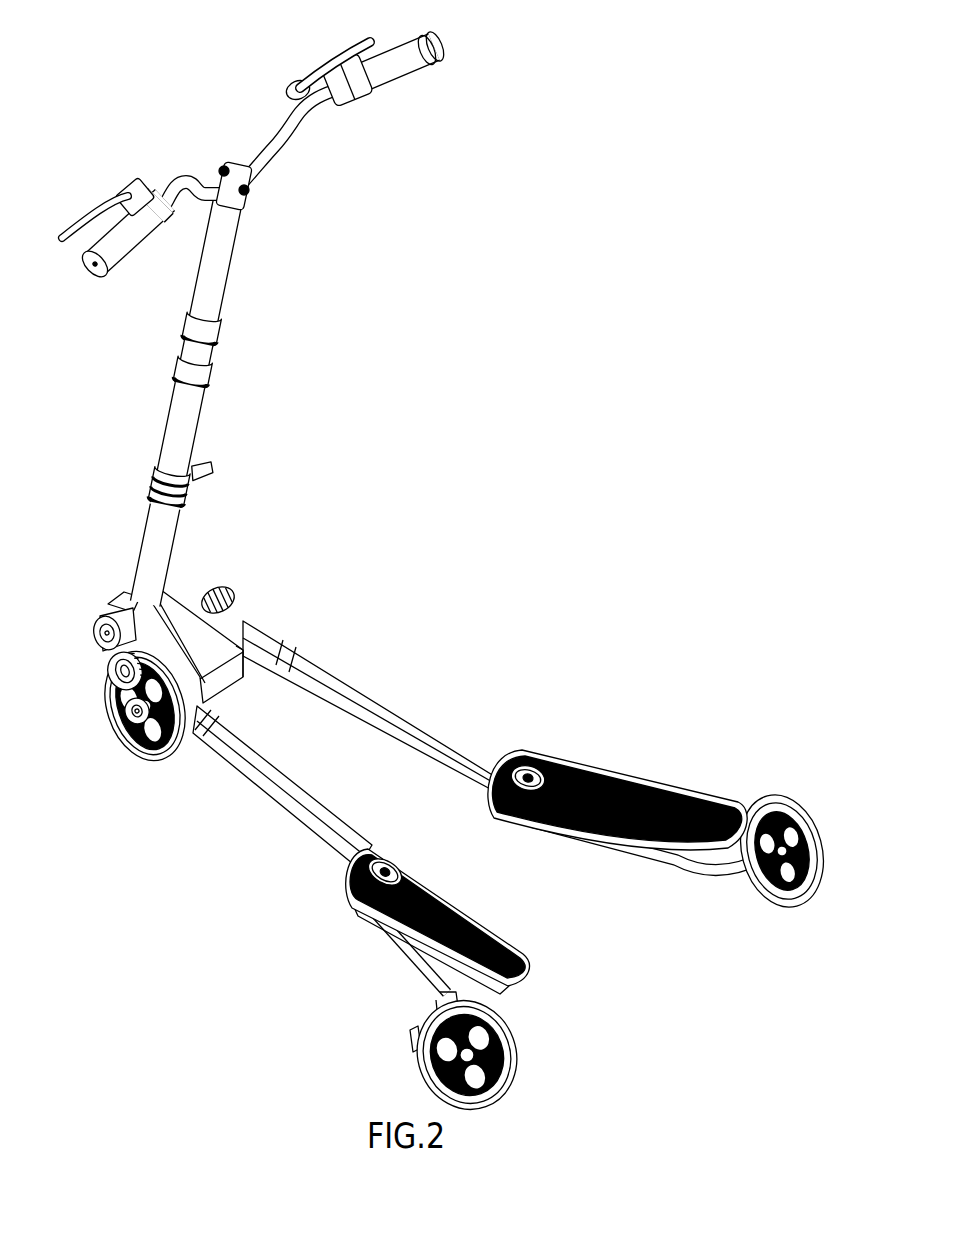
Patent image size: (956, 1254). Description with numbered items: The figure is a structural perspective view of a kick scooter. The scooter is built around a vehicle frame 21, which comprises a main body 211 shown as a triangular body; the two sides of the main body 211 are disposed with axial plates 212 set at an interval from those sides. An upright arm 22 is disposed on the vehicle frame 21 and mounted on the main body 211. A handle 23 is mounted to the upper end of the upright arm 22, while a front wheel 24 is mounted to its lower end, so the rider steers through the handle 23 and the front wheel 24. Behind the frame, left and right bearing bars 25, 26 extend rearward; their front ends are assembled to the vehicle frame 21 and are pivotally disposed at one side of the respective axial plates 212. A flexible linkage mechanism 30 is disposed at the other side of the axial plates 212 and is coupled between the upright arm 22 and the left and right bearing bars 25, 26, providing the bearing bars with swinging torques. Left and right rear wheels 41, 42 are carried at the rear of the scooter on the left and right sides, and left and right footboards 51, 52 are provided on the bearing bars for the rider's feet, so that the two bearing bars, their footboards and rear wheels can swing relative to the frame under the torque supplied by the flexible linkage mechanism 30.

The vehicle frame 21 is at (190, 599).
The main body 211 is at (252, 631).
The axial plates 212 is at (226, 632).
The upright arm 22 is at (188, 413).
The handle 23 is at (281, 118).
The front wheel 24 is at (140, 750).
The left bearing bar 25 is at (282, 797).
The right bearing bar 26 is at (378, 718).
The flexible linkage mechanism 30 is at (127, 592).
The left rear wheel 41 is at (502, 1050).
The right rear wheel 42 is at (765, 807).
The left footboard 51 is at (405, 930).
The right footboard 52 is at (600, 773).